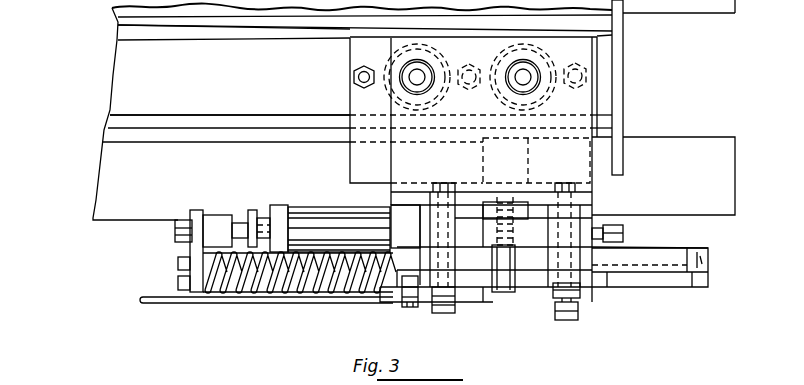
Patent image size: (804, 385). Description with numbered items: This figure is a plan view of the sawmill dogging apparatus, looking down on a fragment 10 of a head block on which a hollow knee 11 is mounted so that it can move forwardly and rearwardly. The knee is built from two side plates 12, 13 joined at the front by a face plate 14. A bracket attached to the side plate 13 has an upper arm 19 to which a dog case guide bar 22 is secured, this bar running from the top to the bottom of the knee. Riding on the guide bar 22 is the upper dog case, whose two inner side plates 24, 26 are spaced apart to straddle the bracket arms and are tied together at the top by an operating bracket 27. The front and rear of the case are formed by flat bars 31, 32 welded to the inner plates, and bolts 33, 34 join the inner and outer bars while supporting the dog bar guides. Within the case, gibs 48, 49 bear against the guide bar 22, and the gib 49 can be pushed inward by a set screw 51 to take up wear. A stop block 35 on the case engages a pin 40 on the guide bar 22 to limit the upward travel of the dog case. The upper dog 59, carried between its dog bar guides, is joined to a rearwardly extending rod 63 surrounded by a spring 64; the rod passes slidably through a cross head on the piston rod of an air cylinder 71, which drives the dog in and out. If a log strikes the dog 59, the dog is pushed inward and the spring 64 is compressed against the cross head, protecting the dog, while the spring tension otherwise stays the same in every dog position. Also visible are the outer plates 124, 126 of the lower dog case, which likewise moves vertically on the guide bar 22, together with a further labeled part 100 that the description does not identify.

The fragment of head block 10 is at (695, 148).
The hollow knee 11 is at (132, 33).
The side plate 12 is at (195, 41).
The side plate 13 is at (185, 123).
The face plate 14 is at (626, 117).
The upper arm 19 is at (531, 161).
The dog case guide bar 22 is at (477, 238).
The inner side plate 24 is at (430, 210).
The inner side plate 26 is at (550, 208).
The operating bracket 27 is at (398, 156).
The front bar 31 is at (590, 247).
The rear bar 32 is at (421, 239).
The bolt 33 is at (427, 293).
The bolt 34 is at (585, 292).
The stop block 35 is at (478, 296).
The pin 40 is at (500, 290).
The gib 48 is at (458, 228).
The gib 49 is at (549, 229).
The set screw 51 is at (603, 213).
The upper dog 59 is at (673, 253).
The rod 63 is at (175, 264).
The spring 64 is at (268, 297).
The air cylinder 71 is at (337, 215).
The roller carriage plate 100 is at (508, 72).
The outer plate 124 is at (455, 298).
The outer plate 126 is at (545, 308).